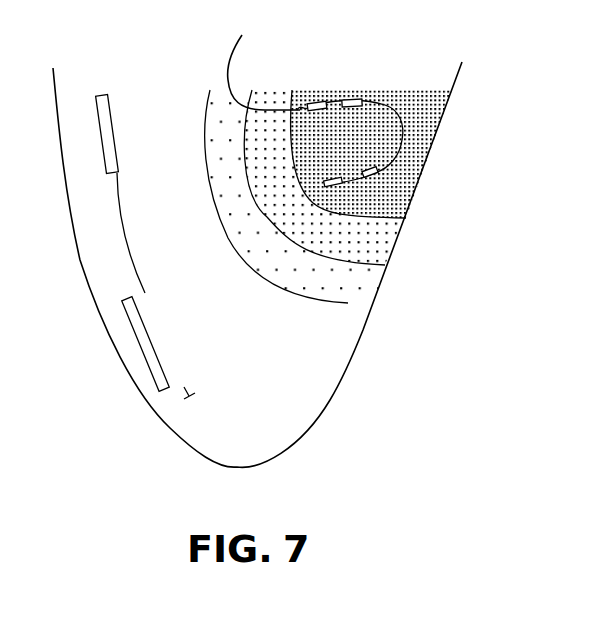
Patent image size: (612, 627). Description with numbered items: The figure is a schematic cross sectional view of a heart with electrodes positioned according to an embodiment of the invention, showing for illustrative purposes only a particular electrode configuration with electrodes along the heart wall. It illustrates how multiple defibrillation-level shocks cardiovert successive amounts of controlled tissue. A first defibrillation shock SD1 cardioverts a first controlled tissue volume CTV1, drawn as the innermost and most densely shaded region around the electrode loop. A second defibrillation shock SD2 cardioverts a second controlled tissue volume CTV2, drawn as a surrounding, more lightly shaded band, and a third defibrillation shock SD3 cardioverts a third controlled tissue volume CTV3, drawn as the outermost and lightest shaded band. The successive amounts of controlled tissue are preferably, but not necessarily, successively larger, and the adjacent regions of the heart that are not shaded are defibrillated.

The controlled tissue volume (first) CTV1 is at (403, 172).
The controlled tissue volume (second) CTV2 is at (380, 242).
The controlled tissue volume (third) CTV3 is at (363, 288).
The defibrillation shock (first) SD1 is at (373, 167).
The defibrillation shock (second) SD2 is at (340, 190).
The defibrillation shock (third) SD3 is at (314, 212).